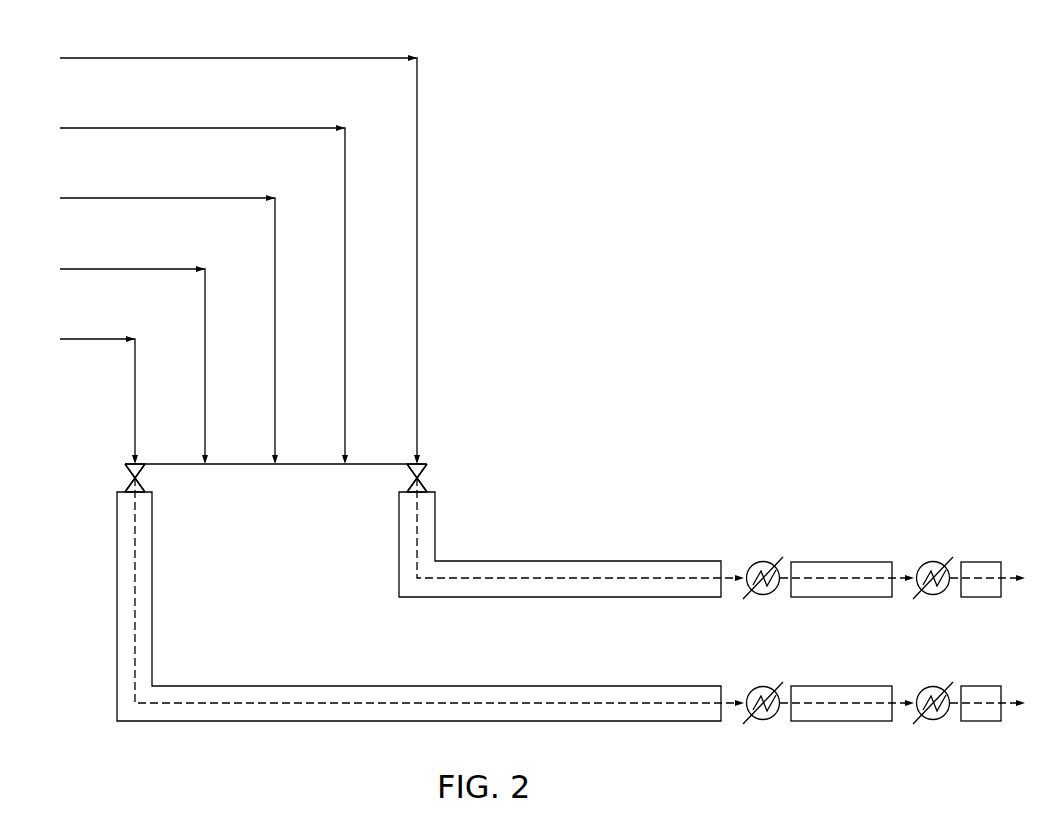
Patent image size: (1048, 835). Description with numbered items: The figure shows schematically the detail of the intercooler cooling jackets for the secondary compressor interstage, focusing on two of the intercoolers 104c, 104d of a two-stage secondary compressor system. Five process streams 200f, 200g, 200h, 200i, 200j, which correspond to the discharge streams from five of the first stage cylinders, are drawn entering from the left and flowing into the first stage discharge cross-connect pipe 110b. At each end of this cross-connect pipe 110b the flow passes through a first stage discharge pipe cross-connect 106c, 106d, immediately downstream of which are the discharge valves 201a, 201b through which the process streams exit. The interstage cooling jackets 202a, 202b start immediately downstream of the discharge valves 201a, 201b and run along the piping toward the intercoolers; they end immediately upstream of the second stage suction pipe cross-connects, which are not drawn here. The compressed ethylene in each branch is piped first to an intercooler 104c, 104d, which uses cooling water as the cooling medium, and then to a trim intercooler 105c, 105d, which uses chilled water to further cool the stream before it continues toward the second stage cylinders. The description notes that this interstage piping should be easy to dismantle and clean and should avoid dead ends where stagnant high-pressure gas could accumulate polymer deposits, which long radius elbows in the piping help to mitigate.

The process stream 200f is at (99, 388).
The process stream 200g is at (134, 353).
The process stream 200h is at (169, 318).
The process stream 200i is at (204, 283).
The process stream 200j is at (240, 248).
The first stage discharge cross-connect pipe 110b is at (305, 466).
The first stage discharge pipe cross-connect 106c is at (128, 464).
The first stage discharge pipe cross-connect 106d is at (426, 466).
The discharge valve 201a is at (130, 480).
The discharge valve 201b is at (424, 478).
The interstage cooling jacket 202a is at (152, 623).
The interstage cooling jacket 202b is at (543, 561).
The intercooler 104c is at (753, 565).
The intercooler 104d is at (753, 690).
The trim intercooler 105c is at (923, 565).
The trim intercooler 105d is at (923, 690).